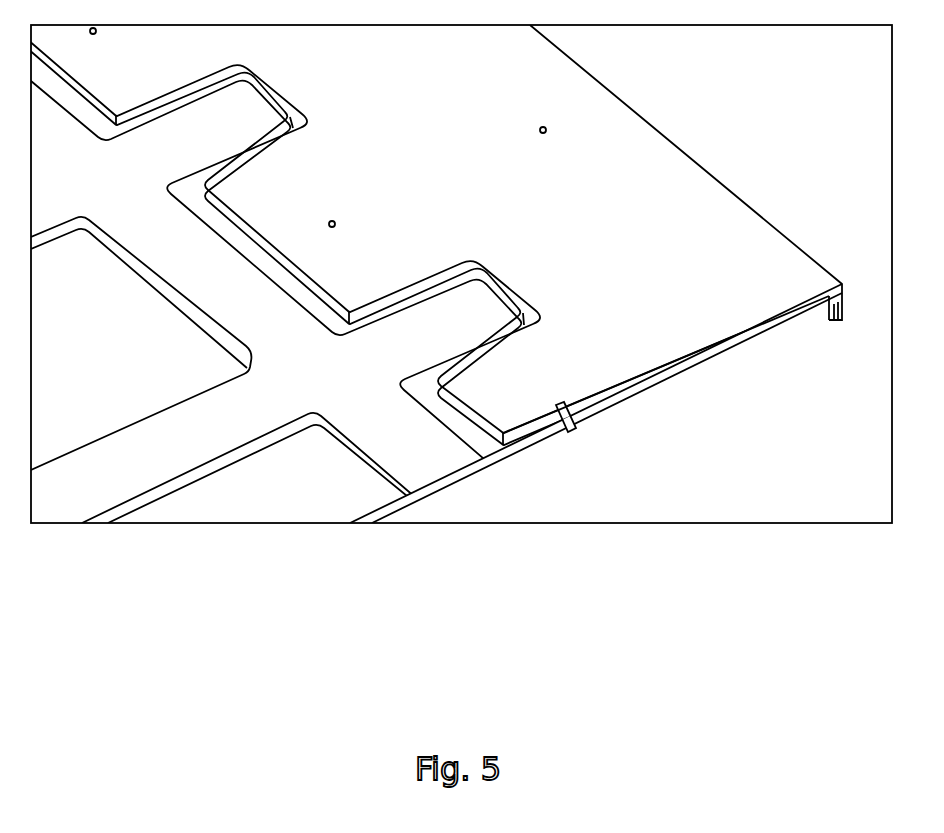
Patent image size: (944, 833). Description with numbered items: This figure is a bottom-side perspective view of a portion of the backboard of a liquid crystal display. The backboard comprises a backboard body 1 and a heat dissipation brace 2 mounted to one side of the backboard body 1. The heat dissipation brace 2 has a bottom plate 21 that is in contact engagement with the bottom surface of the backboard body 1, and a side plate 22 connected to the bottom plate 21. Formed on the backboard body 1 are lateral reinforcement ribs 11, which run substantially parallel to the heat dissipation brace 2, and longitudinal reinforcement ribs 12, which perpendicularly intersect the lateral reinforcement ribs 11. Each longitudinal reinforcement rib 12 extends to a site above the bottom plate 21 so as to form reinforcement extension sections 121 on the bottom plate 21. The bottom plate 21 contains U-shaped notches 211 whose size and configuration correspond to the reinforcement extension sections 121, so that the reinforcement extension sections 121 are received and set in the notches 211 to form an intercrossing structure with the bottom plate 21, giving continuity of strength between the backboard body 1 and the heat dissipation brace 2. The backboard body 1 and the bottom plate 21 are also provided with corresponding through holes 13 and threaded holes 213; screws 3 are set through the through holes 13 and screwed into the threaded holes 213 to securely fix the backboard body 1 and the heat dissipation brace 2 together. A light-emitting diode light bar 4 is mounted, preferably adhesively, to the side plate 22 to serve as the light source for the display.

The backboard body 1 is at (513, 460).
The heat dissipation brace 2 is at (770, 222).
The lateral reinforcement ribs 11 is at (248, 307).
The longitudinal reinforcement ribs 12 is at (230, 418).
The reinforcement extension sections 121 is at (476, 305).
The notches 211 is at (510, 278).
The bottom plate 21 is at (723, 343).
The threaded holes 213 is at (573, 412).
The through holes 13 is at (573, 428).
The screws 3 is at (560, 405).
The light-emitting diode light bar 4 is at (831, 320).
The side plate 22 is at (838, 320).